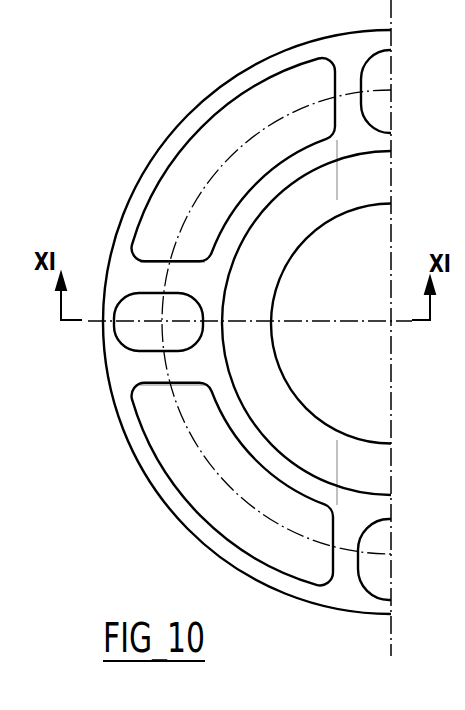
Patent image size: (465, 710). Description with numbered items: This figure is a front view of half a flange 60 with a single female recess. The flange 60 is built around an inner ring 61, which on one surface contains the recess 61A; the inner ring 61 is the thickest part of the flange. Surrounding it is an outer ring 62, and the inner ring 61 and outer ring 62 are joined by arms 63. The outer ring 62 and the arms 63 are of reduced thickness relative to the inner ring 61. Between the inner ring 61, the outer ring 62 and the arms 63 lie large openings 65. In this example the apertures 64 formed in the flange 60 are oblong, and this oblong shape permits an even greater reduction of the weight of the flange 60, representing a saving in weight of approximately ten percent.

The flange 60 is at (131, 76).
The inner ring 61 is at (282, 271).
The recess 61A is at (363, 183).
The outer ring 62 is at (152, 157).
The arms 63 is at (152, 277).
The apertures 64 is at (377, 78).
The openings 65 is at (234, 127).